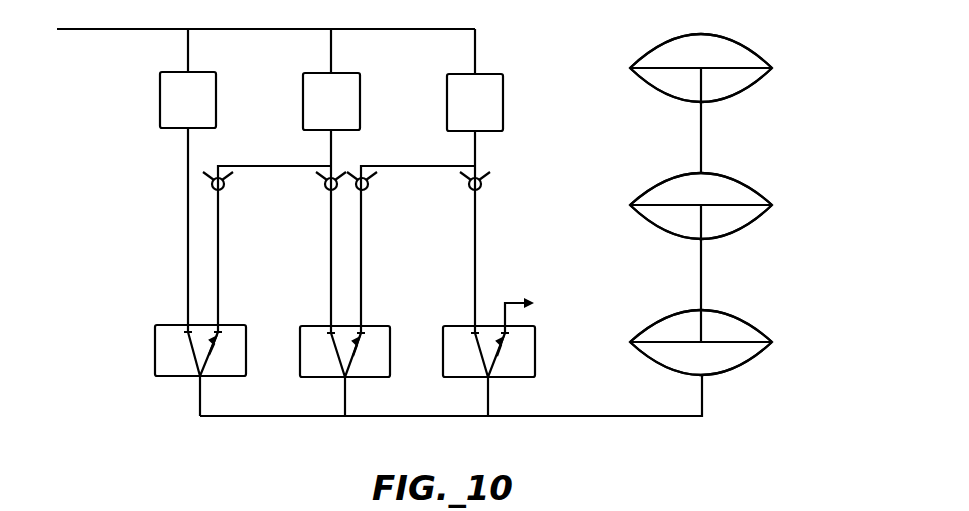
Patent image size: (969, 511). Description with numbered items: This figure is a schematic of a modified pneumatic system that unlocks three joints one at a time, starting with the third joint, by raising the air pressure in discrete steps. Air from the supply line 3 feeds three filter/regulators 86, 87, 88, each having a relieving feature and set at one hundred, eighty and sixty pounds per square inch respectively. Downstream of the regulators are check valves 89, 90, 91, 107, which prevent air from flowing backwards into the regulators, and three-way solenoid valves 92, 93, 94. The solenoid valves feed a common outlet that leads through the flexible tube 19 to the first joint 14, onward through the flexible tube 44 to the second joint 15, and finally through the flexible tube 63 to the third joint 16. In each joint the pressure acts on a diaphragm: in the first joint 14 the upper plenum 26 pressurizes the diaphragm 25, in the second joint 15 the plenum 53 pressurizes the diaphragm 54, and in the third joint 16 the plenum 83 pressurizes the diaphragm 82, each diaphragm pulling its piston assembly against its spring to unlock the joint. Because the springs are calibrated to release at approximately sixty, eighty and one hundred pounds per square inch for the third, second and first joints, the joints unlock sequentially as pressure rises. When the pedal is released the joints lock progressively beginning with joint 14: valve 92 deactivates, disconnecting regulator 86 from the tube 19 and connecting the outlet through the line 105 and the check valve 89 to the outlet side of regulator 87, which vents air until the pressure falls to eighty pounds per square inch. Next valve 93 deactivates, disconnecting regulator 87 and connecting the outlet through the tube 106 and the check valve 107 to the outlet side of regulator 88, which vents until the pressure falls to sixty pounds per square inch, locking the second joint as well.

The supply line 3 is at (112, 29).
The filter/regulator 86 is at (180, 72).
The filter/regulator 87 is at (327, 73).
The filter/regulator 88 is at (468, 74).
The line 105 is at (288, 166).
The tube 106 is at (432, 166).
The check valve 89 is at (224, 190).
The check valve 90 is at (328, 192).
The check valve 107 is at (369, 190).
The check valve 91 is at (471, 192).
The three-way solenoid valve 92 is at (170, 325).
The three-way solenoid valve 93 is at (312, 326).
The three-way solenoid valve 94 is at (458, 326).
The flexible tube 19 is at (633, 416).
The flexible tube 63 is at (700, 142).
The flexible tube 44 is at (700, 278).
The third joint 16 is at (703, 70).
The second joint 15 is at (703, 207).
The first joint 14 is at (703, 344).
The diaphragm 82 is at (655, 68).
The plenum 83 is at (733, 50).
The diaphragm 54 is at (655, 205).
The plenum 53 is at (733, 187).
The diaphragm 25 is at (655, 342).
The upper plenum 26 is at (733, 324).